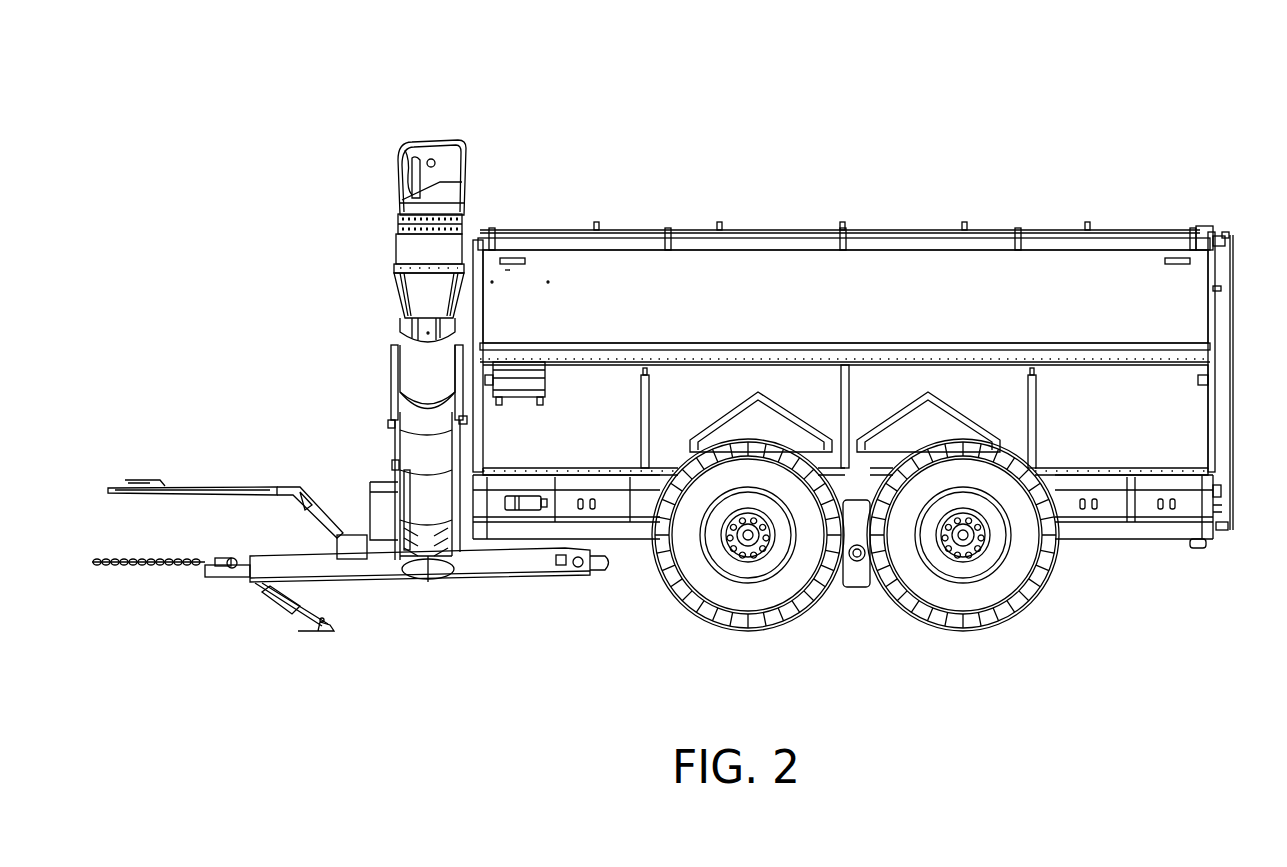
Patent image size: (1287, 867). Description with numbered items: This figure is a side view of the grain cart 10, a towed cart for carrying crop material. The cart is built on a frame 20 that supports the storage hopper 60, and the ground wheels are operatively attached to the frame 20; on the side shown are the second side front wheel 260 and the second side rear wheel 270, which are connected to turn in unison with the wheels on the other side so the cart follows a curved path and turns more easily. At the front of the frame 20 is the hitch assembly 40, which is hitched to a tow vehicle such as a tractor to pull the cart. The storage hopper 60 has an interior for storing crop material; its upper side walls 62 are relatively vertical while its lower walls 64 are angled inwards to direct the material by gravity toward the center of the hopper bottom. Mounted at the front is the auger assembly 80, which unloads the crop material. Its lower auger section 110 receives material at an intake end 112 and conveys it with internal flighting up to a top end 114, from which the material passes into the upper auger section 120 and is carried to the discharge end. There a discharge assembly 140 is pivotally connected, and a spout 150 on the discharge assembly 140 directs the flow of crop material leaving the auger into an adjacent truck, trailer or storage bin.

The grain cart 10 is at (1042, 139).
The frame 20 is at (620, 527).
The hitch assembly 40 is at (341, 582).
The storage hopper 60 is at (1115, 305).
The upper side walls 62 is at (757, 305).
The lower walls 64 is at (1147, 438).
The auger assembly 80 is at (362, 349).
The lower auger section 110 is at (418, 442).
The intake end 112 is at (430, 527).
The top end 114 is at (460, 230).
The upper auger section 120 is at (407, 335).
The discharge assembly 140 is at (443, 167).
The spout 150 is at (427, 293).
The second side front wheel 260 is at (712, 596).
The second side rear wheel 270 is at (942, 596).